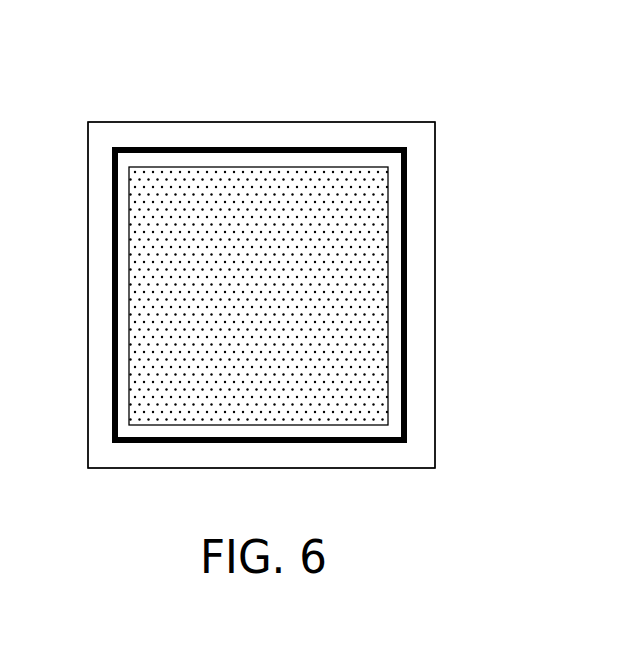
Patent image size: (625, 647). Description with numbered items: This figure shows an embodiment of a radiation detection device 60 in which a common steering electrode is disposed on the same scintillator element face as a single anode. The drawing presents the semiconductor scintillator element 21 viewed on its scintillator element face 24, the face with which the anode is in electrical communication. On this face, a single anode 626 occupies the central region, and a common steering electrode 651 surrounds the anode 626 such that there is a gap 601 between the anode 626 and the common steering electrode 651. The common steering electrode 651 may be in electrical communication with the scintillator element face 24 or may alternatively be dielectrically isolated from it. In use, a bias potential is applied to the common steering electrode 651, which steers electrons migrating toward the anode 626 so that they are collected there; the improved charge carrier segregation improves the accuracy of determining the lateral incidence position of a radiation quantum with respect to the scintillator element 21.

The radiation detection device 60 is at (459, 71).
The semiconductor scintillator element 21 is at (98, 410).
The scintillator element face 24 is at (107, 135).
The common steering electrode 651 is at (342, 147).
The gap 601 is at (207, 158).
The anode 626 is at (370, 310).